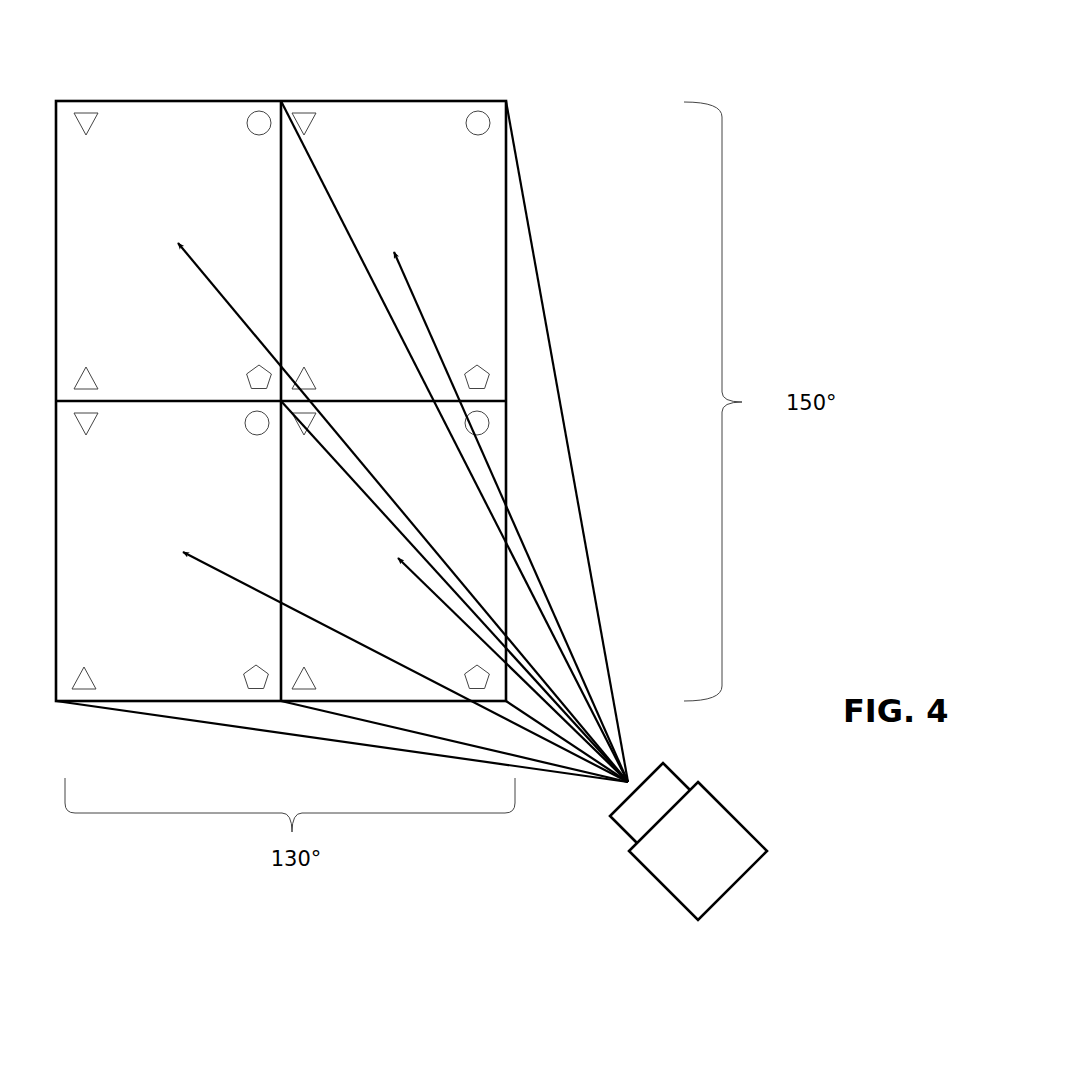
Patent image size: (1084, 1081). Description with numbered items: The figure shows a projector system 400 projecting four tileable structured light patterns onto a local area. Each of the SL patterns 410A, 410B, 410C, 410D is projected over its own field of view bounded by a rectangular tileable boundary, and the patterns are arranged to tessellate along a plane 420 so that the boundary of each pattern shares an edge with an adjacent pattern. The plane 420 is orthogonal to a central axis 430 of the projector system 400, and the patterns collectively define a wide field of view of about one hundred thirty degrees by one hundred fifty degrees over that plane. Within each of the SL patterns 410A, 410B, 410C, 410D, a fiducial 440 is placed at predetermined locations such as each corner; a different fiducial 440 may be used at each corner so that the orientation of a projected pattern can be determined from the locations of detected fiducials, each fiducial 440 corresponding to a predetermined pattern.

The projector system 400 is at (730, 858).
The SL pattern 410A is at (372, 512).
The SL pattern 410B is at (471, 517).
The SL pattern 410C is at (371, 667).
The SL pattern 410D is at (485, 670).
The plane 420 is at (151, 100).
The central axis 430 is at (453, 588).
The fiducial 440 is at (478, 123).